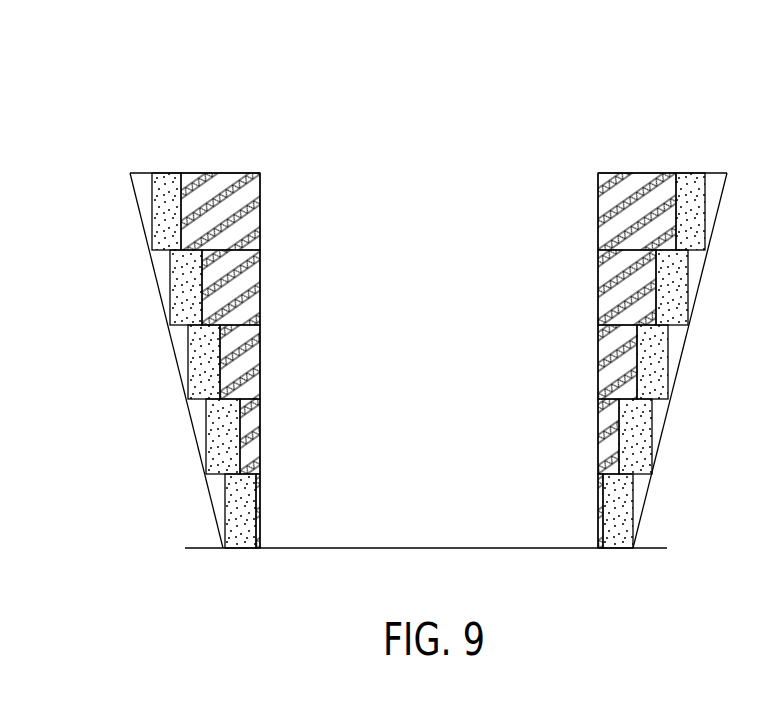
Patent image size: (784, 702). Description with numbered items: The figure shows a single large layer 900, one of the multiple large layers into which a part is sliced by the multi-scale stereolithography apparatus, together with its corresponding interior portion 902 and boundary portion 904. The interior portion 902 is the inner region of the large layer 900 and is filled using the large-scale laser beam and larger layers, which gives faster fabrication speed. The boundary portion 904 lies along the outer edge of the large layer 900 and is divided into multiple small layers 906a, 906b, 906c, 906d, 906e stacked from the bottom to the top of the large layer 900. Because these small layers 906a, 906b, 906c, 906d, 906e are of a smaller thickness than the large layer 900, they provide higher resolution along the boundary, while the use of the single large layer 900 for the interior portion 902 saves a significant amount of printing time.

The large layer 900 is at (95, 112).
The interior portion 902 is at (537, 548).
The boundary portion 904 is at (260, 152).
The small layer 906a is at (258, 512).
The small layer 906b is at (256, 438).
The small layer 906c is at (257, 367).
The small layer 906d is at (252, 290).
The small layer 906e is at (252, 212).